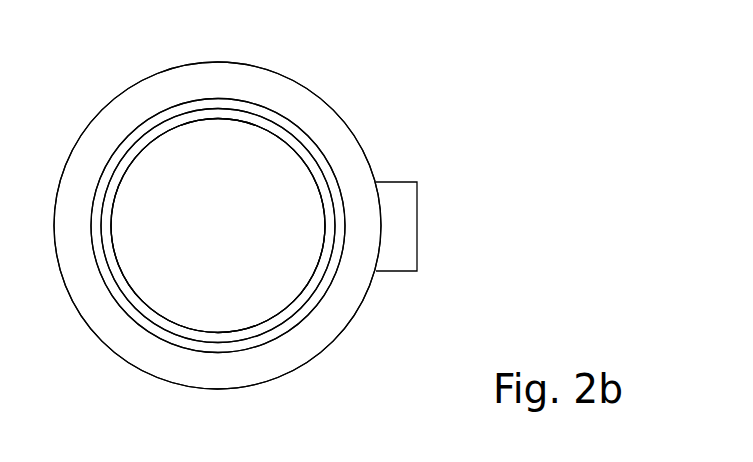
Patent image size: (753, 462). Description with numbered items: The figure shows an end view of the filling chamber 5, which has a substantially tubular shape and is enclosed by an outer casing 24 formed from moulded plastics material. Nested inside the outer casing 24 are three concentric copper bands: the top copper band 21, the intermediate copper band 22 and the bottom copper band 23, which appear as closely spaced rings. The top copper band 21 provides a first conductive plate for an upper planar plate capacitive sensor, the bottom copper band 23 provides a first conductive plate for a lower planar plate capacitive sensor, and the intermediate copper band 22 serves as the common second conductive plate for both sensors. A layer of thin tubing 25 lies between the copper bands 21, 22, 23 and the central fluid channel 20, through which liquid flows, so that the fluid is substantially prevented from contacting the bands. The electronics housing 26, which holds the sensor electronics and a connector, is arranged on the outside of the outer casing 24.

The filling chamber 5 is at (422, 91).
The fluid channel 20 is at (233, 229).
The top copper band 21 is at (315, 310).
The intermediate copper band 22 is at (218, 226).
The bottom copper band 23 is at (218, 226).
The outer casing 24 is at (115, 114).
The thin tubing 25 is at (123, 278).
The electronics housing 26 is at (430, 222).